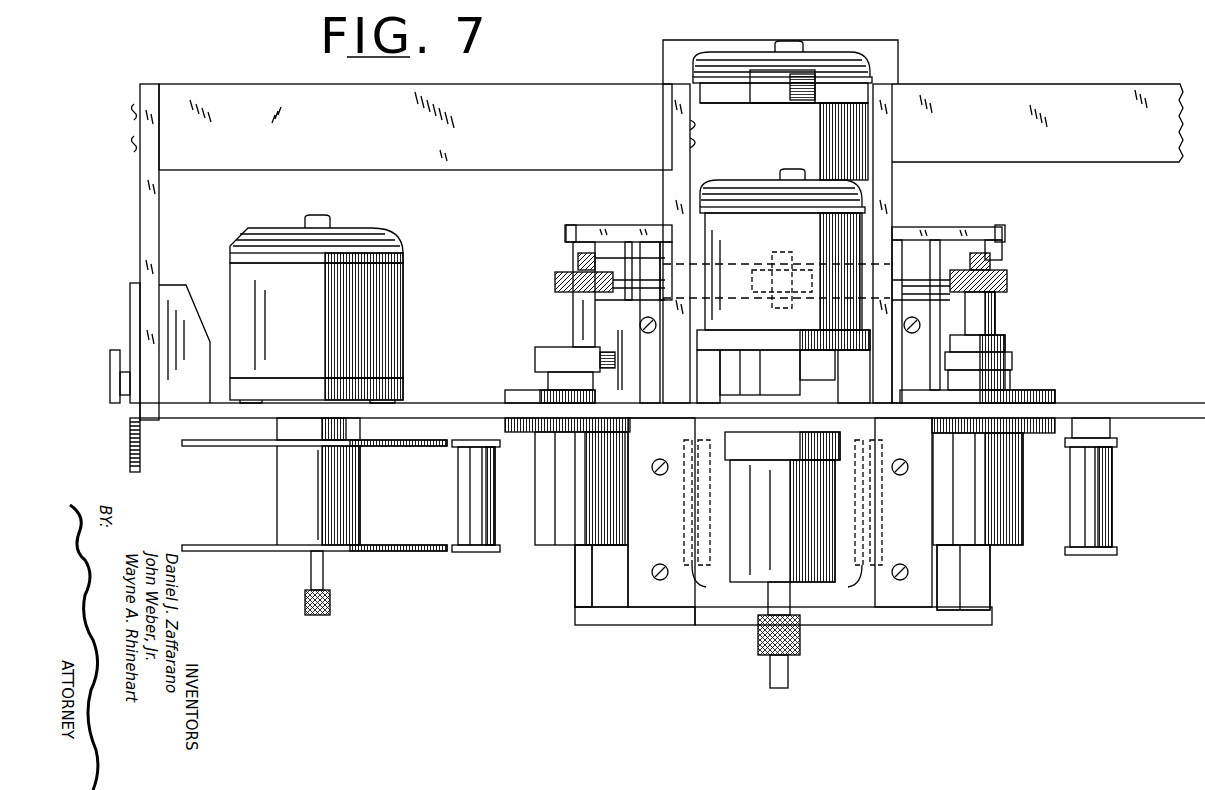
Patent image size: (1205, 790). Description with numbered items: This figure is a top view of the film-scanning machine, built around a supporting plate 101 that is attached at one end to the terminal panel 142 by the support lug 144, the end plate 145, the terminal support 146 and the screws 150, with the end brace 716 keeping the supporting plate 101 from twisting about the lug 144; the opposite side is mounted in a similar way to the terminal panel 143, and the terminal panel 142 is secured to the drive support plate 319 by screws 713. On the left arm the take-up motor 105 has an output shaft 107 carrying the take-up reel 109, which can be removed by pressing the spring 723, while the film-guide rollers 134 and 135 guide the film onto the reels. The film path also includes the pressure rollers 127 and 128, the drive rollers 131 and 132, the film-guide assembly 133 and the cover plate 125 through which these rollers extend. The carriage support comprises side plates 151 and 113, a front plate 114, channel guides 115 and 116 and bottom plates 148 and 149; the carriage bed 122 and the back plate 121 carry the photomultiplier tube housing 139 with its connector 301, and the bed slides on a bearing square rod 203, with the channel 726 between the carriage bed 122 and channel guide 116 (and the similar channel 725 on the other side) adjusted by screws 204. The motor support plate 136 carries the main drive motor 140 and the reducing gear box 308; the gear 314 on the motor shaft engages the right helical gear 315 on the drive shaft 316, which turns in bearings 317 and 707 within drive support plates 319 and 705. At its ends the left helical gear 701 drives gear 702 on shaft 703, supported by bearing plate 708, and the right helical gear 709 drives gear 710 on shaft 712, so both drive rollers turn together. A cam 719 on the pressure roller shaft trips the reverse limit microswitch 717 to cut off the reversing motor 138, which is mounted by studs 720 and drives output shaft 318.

The supporting plate 101 is at (198, 408).
The take-up motor 105 is at (253, 246).
The output shaft 107 is at (300, 430).
The take-up reel 109 is at (276, 506).
The side plate 113 is at (995, 245).
The front plate 114 is at (703, 616).
The channel guide 115 is at (657, 597).
The channel guide 116 is at (924, 248).
The back plate 121 is at (748, 356).
The carriage bed 122 is at (812, 560).
The cover plate 125 is at (520, 428).
The pressure roller 127 is at (572, 548).
The pressure roller 128 is at (986, 554).
The drive roller 131 is at (547, 540).
The drive roller 132 is at (988, 534).
The film-guide assembly 133 is at (757, 652).
The film-guide roller 134 is at (462, 486).
The film-guide roller 135 is at (1100, 516).
The motor support plate 136 is at (1006, 230).
The reversing motor 138 is at (742, 205).
The photomultiplier tube housing 139 is at (722, 110).
The main drive motor 140 is at (856, 62).
The terminal panel 142 is at (188, 96).
The terminal panel 143 is at (990, 90).
The support lug 144 is at (113, 352).
The end plate 145 is at (128, 290).
The terminal support 146 is at (143, 212).
The bottom plate 148 is at (583, 240).
The bottom plate 149 is at (958, 246).
The screws 150 is at (133, 144).
The side plate 151 is at (566, 240).
The bearing square rod 203 is at (710, 518).
The adjustment screws 204 is at (670, 475).
The connector 301 is at (800, 78).
The reducing gear box 308 is at (899, 58).
The gear 314 is at (753, 275).
The right helical gear 315 is at (780, 254).
The drive shaft 316 is at (628, 260).
The bearing 317 is at (665, 250).
The output shaft 318 is at (778, 386).
The drive support plate 319 is at (664, 104).
The left helical gear 701 is at (578, 261).
The gear 702 is at (555, 284).
The shaft 703 is at (573, 310).
The drive support plate 705 is at (893, 162).
The bearing 707 is at (902, 248).
The bearing plate 708 is at (515, 395).
The right helical gear 709 is at (992, 262).
The gear 710 is at (1008, 282).
The shaft 712 is at (997, 316).
The screws 713 is at (700, 143).
The end brace 716 is at (164, 292).
The reverse limit microswitch 717 is at (540, 352).
The cam 719 is at (616, 360).
The studs 720 is at (705, 378).
The spring 723 is at (308, 578).
The channel 725 is at (700, 580).
The channel 726 is at (862, 587).